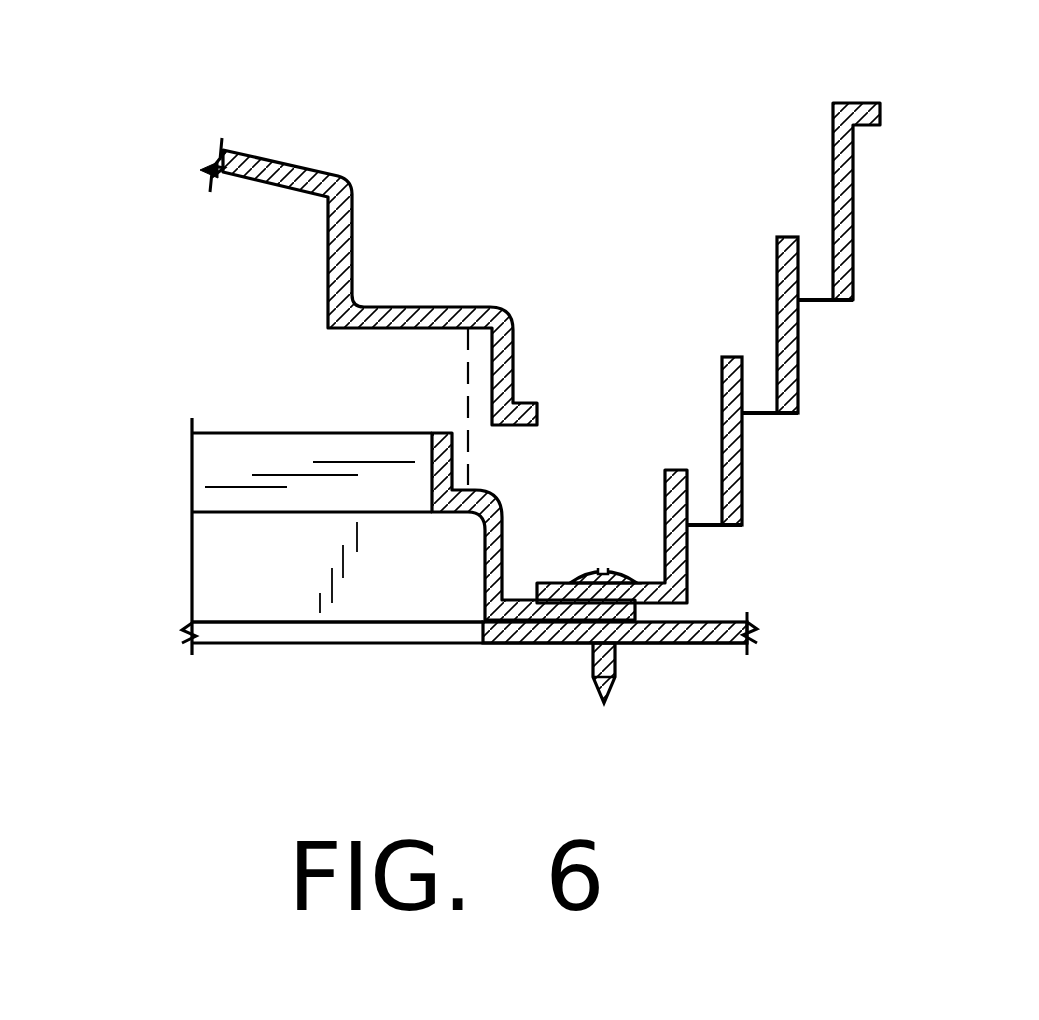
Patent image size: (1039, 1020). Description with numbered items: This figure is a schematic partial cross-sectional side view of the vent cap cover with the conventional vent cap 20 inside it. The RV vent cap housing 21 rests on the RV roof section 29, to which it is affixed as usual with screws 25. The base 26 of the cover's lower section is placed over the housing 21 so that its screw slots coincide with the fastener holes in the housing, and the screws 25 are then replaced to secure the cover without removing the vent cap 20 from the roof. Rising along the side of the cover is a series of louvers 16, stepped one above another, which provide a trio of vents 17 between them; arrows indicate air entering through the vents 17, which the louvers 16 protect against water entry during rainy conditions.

The louvers 16 is at (853, 248).
The vents 17 is at (804, 185).
The vent cap 20 is at (410, 268).
The vent cap housing 21 is at (253, 433).
The screws 25 is at (617, 567).
The base 26 is at (545, 580).
The RV roof section 29 is at (677, 627).